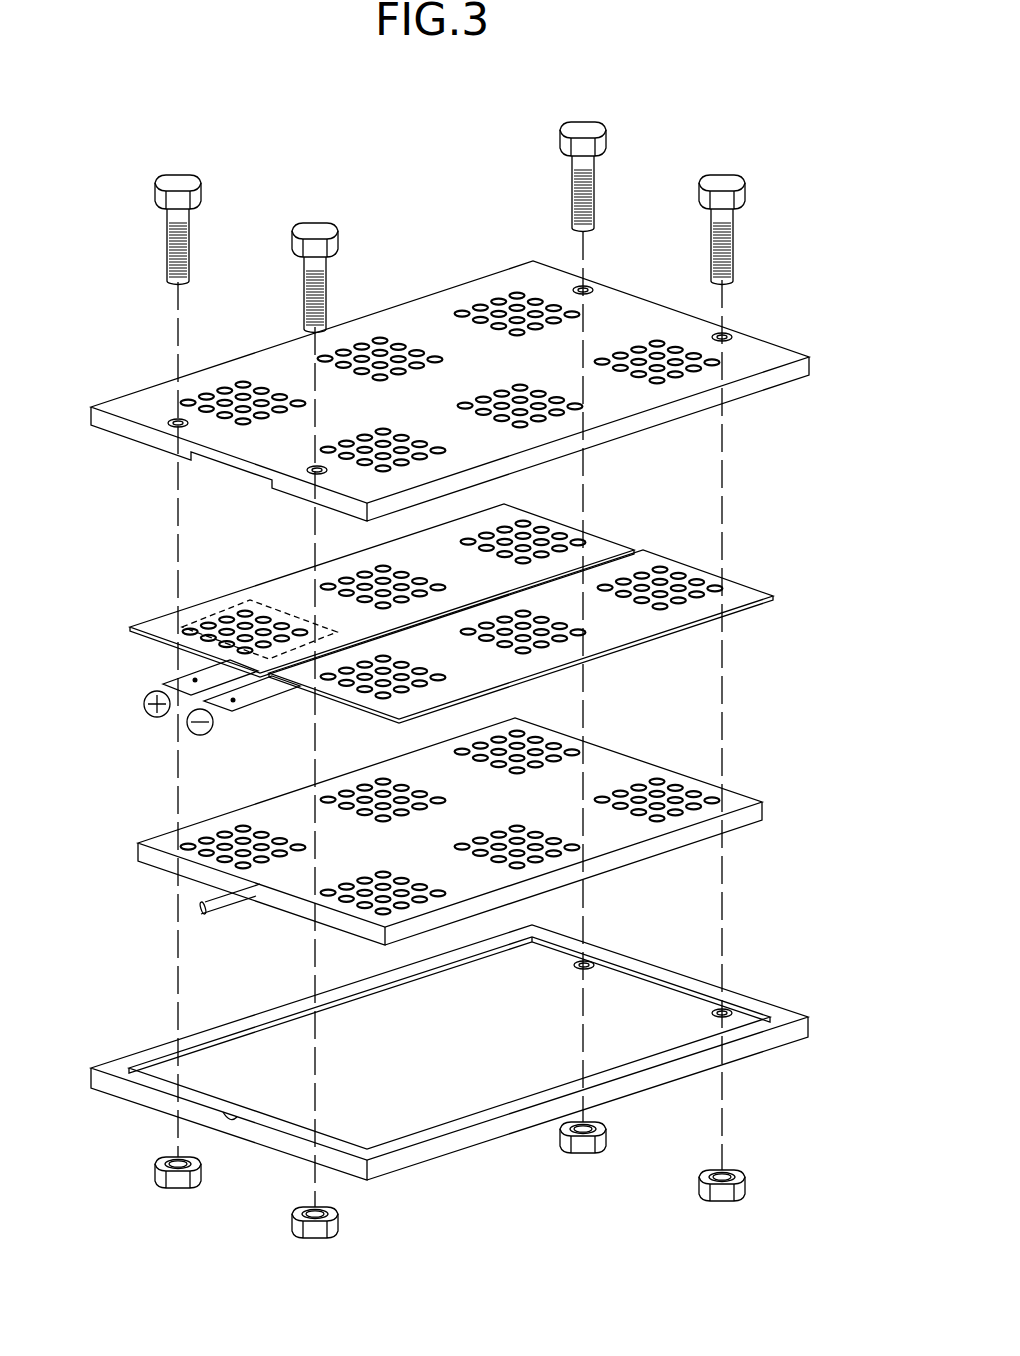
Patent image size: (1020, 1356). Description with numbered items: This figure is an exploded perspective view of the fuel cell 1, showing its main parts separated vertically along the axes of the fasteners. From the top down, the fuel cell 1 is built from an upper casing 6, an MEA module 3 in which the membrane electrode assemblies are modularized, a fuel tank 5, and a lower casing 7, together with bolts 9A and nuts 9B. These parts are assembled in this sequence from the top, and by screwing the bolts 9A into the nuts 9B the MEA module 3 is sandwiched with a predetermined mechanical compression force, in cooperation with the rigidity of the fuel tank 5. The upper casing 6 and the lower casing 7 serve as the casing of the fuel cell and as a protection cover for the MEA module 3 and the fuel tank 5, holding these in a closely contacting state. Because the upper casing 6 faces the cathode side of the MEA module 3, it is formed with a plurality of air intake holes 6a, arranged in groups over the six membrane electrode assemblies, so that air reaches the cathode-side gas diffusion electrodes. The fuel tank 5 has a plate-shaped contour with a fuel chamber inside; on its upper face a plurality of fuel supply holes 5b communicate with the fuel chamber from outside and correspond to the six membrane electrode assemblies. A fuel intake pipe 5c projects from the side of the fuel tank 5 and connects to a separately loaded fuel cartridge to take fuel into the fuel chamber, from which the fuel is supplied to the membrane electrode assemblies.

The fuel cell 1 is at (90, 182).
The MEA module 3 is at (668, 560).
The fuel tank 5 is at (474, 835).
The fuel supply holes 5b is at (703, 808).
The fuel intake pipe 5c is at (235, 903).
The upper casing 6 is at (456, 391).
The air intake holes 6a is at (703, 366).
The lower casing 7 is at (766, 1000).
The bolts 9A is at (600, 127).
The nuts 9B is at (584, 1152).